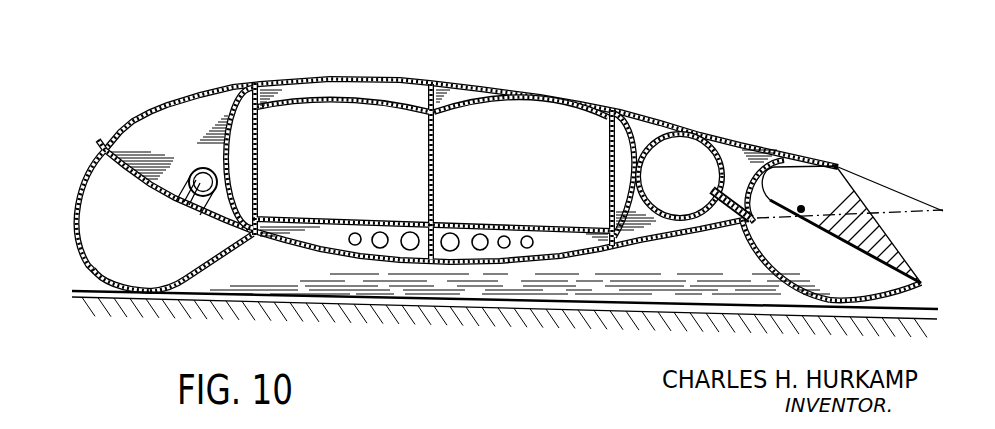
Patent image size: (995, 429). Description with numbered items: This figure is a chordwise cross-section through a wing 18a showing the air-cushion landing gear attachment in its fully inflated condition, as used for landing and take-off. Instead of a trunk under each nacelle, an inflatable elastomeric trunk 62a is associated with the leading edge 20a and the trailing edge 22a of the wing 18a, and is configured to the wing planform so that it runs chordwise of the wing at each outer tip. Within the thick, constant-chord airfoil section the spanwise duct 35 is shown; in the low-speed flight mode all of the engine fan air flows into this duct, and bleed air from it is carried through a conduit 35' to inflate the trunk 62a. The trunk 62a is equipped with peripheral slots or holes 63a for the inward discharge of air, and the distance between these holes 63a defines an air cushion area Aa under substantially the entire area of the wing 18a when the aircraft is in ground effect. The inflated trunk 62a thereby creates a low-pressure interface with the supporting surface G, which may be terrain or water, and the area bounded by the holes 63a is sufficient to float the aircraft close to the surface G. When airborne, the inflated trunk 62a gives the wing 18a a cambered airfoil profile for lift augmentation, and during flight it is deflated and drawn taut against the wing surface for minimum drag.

The wing 18a is at (481, 90).
The leading edge 20a is at (106, 140).
The trailing edge 22a is at (922, 282).
The spanwise duct 35 is at (680, 176).
The conduit 35' is at (758, 220).
The trunk 62a is at (124, 290).
The holes 63a is at (160, 288).
The supporting surface G is at (592, 308).
The air cushion area Aa is at (684, 285).